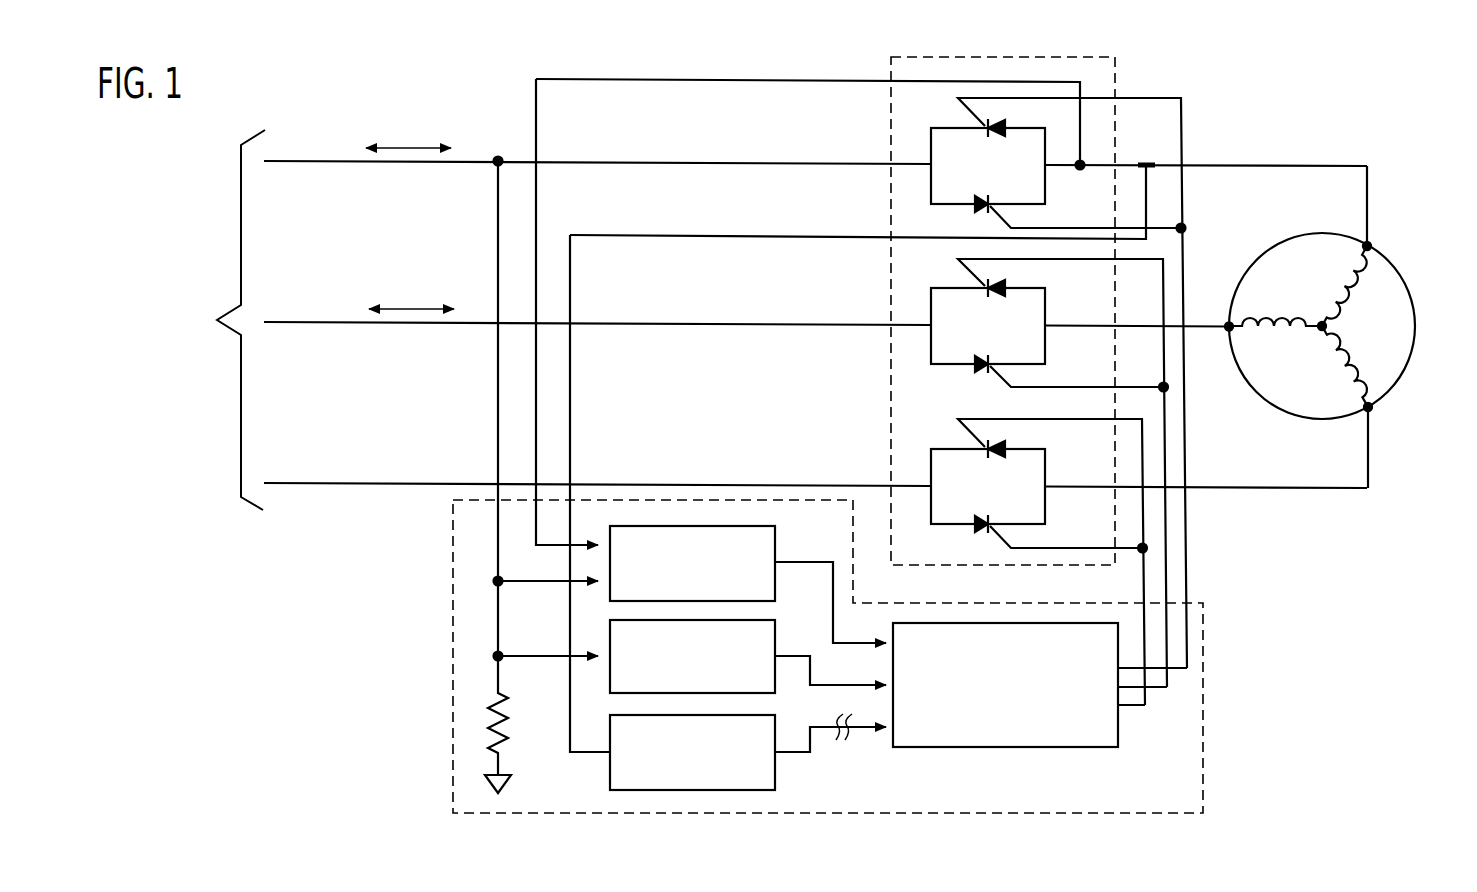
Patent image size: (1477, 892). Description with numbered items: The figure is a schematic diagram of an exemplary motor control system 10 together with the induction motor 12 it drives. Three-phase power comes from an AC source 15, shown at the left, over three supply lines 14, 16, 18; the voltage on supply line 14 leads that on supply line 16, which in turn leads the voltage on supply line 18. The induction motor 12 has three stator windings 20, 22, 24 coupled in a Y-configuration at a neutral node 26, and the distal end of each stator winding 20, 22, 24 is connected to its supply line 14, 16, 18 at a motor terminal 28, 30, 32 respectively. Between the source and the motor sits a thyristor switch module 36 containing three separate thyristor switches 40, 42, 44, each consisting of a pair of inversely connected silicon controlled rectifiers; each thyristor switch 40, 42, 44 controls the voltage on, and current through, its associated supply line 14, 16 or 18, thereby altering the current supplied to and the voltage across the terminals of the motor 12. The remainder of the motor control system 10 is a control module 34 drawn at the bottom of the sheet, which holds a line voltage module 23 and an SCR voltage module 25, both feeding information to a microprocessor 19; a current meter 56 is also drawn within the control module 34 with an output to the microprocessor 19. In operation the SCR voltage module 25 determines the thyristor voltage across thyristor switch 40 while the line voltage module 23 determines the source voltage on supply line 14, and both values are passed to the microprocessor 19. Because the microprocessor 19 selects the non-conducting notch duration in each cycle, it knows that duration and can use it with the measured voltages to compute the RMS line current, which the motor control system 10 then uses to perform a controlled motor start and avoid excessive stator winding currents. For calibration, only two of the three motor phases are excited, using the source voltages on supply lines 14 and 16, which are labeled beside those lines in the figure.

The motor control system 10 is at (470, 97).
The induction motor 12 is at (1406, 260).
The supply line 14 is at (350, 161).
The AC source 15 is at (216, 408).
The supply line 16 is at (331, 322).
The supply line 18 is at (346, 483).
The microprocessor 19 is at (999, 712).
The stator winding 20 is at (1347, 268).
The stator winding 22 is at (1260, 325).
The line voltage module 23 is at (777, 635).
The stator winding 24 is at (1340, 353).
The SCR voltage module 25 is at (777, 537).
The neutral node 26 is at (1327, 321).
The motor terminal 28 is at (1367, 246).
The motor terminal 30 is at (1229, 326).
The motor terminal 32 is at (1367, 410).
The control module 34 is at (1175, 765).
The thyristor switch module 36 is at (1103, 81).
The thyristor switch 40 is at (930, 152).
The thyristor switch 42 is at (930, 312).
The thyristor switch 44 is at (930, 472).
The current meter 56 is at (777, 765).